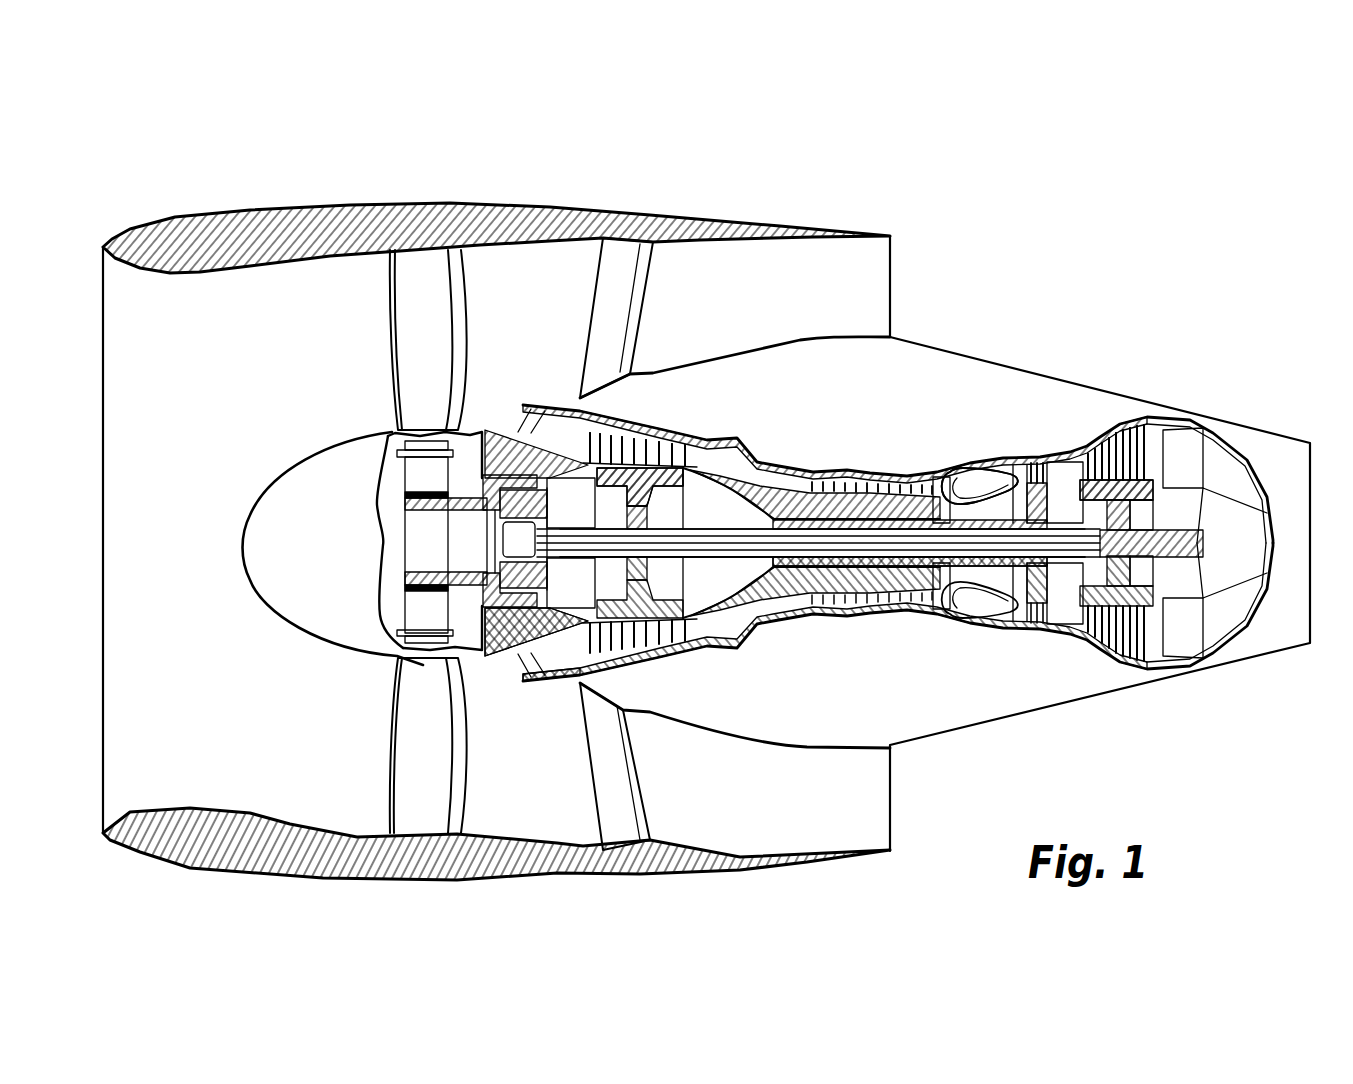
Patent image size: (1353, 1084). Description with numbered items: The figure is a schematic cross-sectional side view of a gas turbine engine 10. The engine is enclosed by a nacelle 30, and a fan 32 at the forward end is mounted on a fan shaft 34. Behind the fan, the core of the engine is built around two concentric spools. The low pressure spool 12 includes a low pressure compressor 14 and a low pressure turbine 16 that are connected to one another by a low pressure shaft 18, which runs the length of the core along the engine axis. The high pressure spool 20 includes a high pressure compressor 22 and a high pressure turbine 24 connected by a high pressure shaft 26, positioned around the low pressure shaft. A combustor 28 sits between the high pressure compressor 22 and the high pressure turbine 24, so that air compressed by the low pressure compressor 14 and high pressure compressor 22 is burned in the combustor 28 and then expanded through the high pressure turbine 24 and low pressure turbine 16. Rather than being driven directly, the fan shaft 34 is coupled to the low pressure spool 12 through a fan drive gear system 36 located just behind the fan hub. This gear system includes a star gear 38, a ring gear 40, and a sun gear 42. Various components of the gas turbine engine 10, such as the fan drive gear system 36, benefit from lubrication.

The gas turbine engine 10 is at (733, 183).
The low pressure spool 12 is at (742, 572).
The low pressure compressor 14 is at (666, 425).
The low pressure turbine 16 is at (1112, 416).
The low pressure shaft 18 is at (703, 557).
The high pressure spool 20 is at (1002, 581).
The high pressure compressor 22 is at (907, 466).
The high pressure turbine 24 is at (1039, 448).
The high pressure shaft 26 is at (947, 563).
The combustor 28 is at (983, 448).
The nacelle 30 is at (529, 395).
The fan 32 is at (422, 357).
The fan shaft 34 is at (400, 668).
The fan drive gear system 36 is at (480, 537).
The star gear 38 is at (470, 652).
The ring gear 40 is at (495, 612).
The sun gear 42 is at (513, 533).